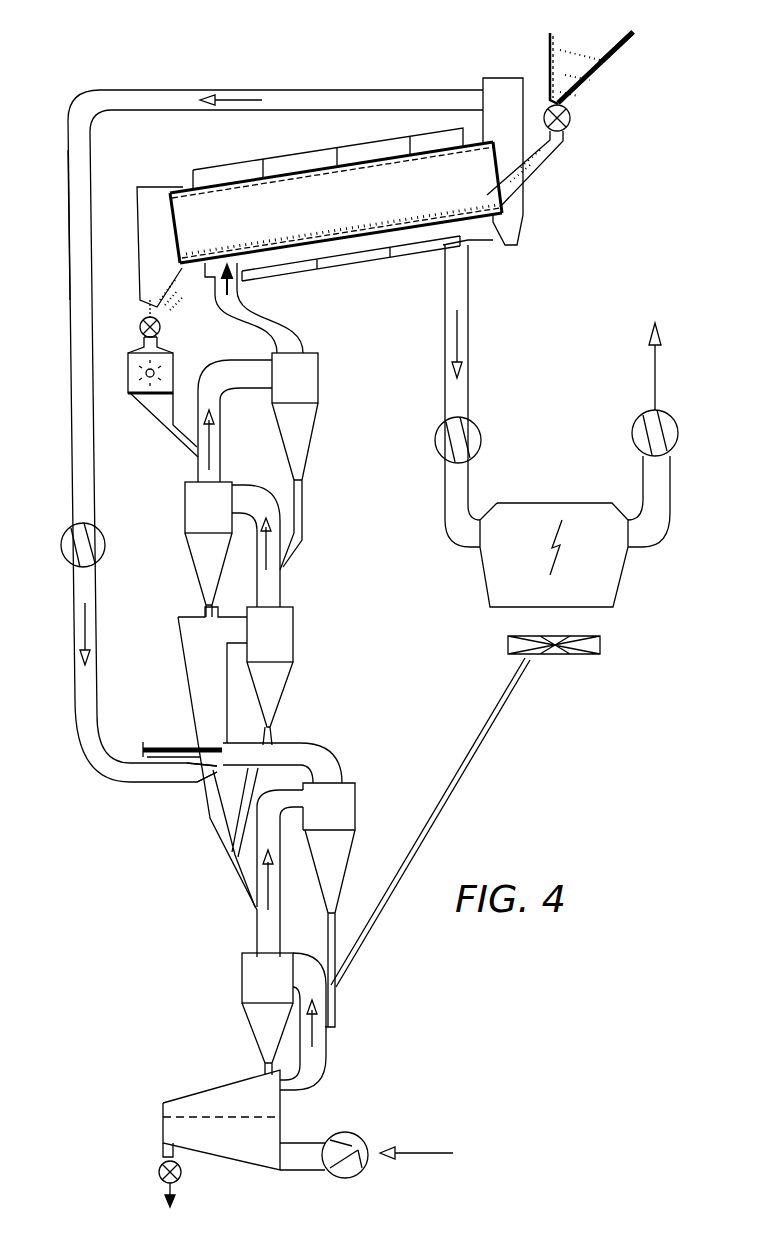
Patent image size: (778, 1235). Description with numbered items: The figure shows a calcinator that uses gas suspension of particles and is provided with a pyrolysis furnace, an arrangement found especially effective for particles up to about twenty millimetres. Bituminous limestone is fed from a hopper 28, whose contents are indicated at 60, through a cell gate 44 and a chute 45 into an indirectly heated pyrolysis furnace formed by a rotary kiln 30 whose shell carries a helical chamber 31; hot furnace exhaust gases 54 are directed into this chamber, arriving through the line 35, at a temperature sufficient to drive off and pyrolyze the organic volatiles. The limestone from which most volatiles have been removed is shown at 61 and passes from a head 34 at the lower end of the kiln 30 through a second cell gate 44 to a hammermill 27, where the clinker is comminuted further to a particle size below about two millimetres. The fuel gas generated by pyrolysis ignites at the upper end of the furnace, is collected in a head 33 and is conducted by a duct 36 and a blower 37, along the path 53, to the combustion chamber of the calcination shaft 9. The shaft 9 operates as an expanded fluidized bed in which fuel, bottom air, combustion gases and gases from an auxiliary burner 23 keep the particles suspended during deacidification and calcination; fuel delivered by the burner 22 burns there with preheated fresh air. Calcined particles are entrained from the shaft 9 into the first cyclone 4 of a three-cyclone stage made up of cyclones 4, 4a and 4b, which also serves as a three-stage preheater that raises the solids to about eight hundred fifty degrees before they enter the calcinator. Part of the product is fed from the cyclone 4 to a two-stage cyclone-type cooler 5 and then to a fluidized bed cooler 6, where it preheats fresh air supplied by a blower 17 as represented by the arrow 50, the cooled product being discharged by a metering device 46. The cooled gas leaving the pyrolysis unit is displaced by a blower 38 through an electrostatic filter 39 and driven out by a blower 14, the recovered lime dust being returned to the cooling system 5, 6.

The feed hopper 60 is at (588, 45).
The hopper 28 is at (608, 74).
The cell gate 44 is at (572, 120).
The chute 45 is at (540, 168).
The head 33 is at (523, 233).
The rotary kiln 30 is at (476, 141).
The helical chamber 31 is at (290, 153).
The head 34 is at (155, 187).
The tertiary air duct 53 is at (247, 100).
The duct 36 is at (68, 187).
The blower 37 is at (70, 530).
The limestone 61 is at (178, 288).
The hammermill 27 is at (125, 377).
The furnace exhaust gases 54 is at (240, 290).
The cyclone 4b is at (318, 378).
The cyclone 4a is at (185, 505).
The first cyclone 4 is at (293, 625).
The calcination shaft 9 is at (178, 645).
The auxiliary burner 23 is at (165, 745).
The burner 22 is at (193, 787).
The cyclone-type cooler 5 is at (355, 790).
The fluidized bed cooler 6 is at (200, 1093).
The metering device 46 is at (160, 1165).
The blower 17 is at (357, 1133).
The arrow 50 is at (433, 1150).
The exhaust gas line 35 is at (470, 290).
The blower 38 is at (485, 435).
The electrostatic precipitator 39 is at (623, 582).
The blower 14 is at (672, 413).